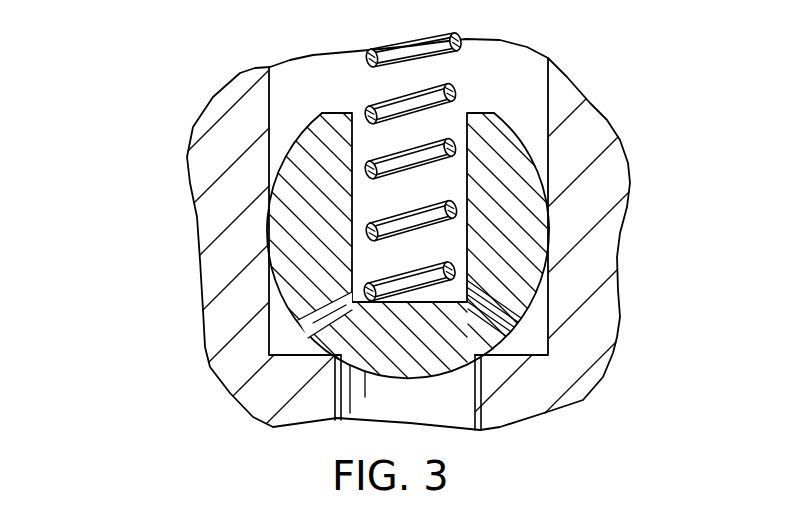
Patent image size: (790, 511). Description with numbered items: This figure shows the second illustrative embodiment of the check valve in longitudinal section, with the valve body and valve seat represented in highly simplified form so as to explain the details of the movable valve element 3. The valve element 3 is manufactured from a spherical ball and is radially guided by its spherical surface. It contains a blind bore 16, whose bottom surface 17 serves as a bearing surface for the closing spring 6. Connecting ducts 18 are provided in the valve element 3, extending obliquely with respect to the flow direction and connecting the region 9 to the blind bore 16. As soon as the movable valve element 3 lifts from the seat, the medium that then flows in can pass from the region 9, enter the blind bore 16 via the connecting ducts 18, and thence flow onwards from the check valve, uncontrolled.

The valve element 3 is at (548, 156).
The closing spring 6 is at (462, 91).
The region 9 is at (545, 340).
The blind bore 16 is at (462, 166).
The bottom surface 17 is at (432, 298).
The connecting ducts 18 is at (483, 315).